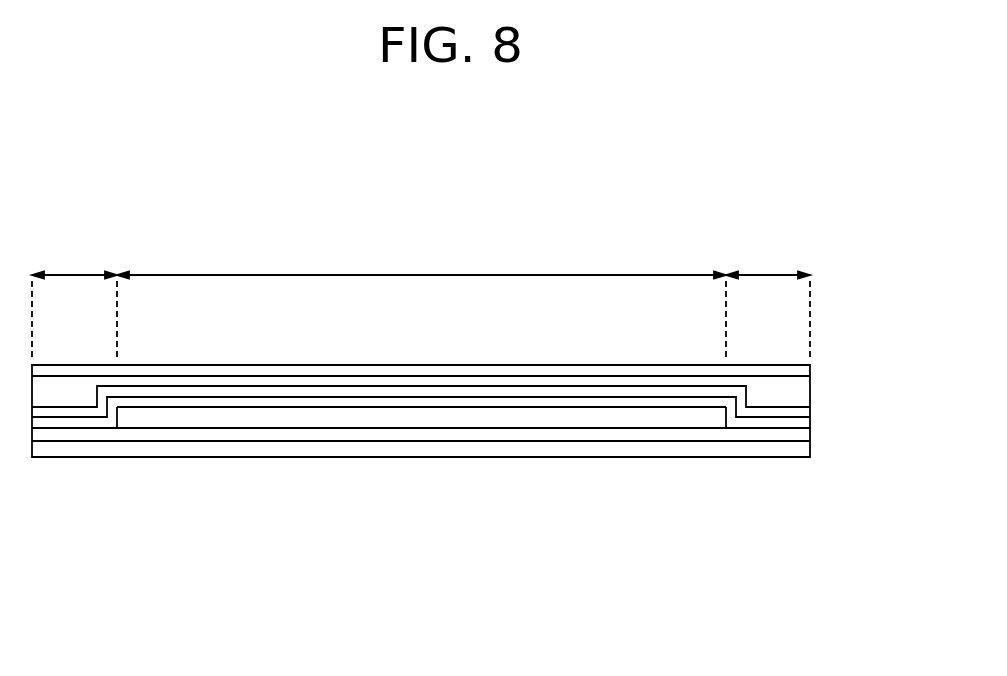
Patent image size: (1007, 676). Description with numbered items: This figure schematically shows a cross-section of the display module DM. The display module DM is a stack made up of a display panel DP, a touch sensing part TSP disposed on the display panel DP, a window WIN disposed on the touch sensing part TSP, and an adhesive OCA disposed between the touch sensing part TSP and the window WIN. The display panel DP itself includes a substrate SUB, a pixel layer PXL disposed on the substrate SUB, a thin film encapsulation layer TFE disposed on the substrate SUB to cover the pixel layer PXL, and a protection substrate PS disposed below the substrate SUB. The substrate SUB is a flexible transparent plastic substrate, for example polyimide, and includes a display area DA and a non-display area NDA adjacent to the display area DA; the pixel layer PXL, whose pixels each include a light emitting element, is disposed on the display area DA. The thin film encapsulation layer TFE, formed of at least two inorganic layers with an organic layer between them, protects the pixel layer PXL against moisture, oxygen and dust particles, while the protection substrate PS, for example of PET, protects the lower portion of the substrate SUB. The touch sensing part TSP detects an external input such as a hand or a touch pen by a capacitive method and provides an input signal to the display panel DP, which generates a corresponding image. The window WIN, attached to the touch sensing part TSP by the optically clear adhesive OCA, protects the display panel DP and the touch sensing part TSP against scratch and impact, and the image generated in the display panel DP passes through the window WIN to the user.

The display module DM is at (830, 212).
The display area DA is at (421, 259).
The non-display area NDA is at (421, 298).
The window WIN is at (583, 368).
The adhesive OCA is at (800, 394).
The touch sensing part TSP is at (512, 390).
The thin film encapsulation layer TFE is at (439, 402).
The pixel layer PXL is at (366, 420).
The substrate SUB is at (294, 435).
The protection substrate PS is at (228, 448).
The display panel DP is at (463, 525).